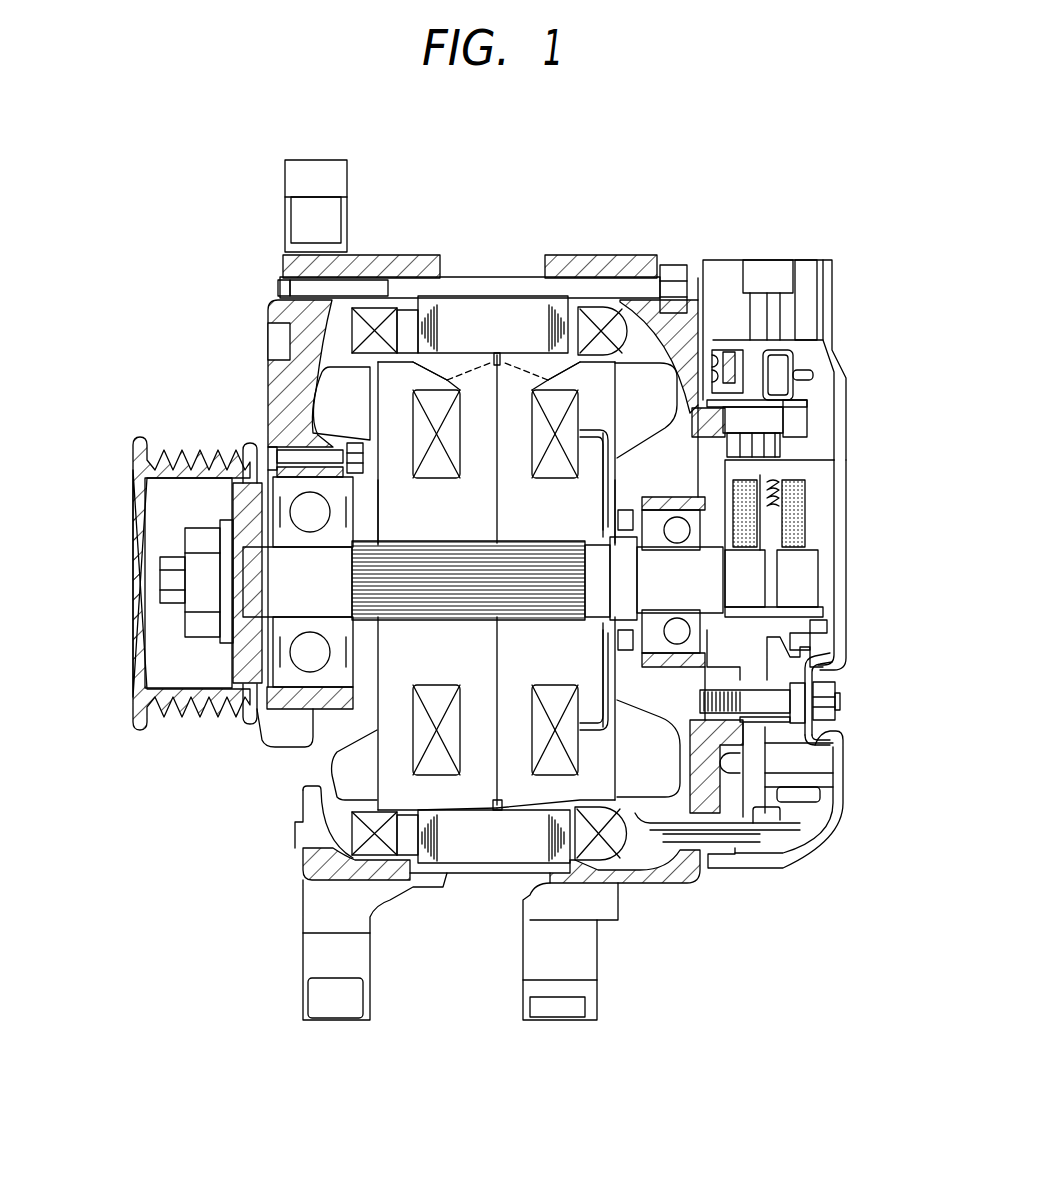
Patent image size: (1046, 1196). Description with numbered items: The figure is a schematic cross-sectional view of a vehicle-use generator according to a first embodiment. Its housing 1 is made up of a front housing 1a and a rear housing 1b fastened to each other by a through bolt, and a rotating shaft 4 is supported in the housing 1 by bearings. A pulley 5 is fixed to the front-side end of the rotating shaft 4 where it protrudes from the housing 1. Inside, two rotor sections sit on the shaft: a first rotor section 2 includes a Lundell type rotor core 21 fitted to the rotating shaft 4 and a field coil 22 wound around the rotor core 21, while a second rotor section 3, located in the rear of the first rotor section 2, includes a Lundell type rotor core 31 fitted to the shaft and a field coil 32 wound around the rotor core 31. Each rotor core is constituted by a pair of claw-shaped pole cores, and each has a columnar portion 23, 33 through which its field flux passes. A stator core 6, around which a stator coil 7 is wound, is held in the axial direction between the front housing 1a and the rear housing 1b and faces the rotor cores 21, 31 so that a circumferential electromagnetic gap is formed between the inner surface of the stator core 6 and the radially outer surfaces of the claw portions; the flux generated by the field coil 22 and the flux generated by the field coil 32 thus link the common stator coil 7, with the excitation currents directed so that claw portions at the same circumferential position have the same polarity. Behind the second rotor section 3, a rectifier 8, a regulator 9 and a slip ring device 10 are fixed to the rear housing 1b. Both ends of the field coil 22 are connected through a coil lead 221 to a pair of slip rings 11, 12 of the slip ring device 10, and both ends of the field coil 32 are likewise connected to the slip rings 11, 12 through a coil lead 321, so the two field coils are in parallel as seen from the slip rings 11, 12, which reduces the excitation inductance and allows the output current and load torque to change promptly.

The housing 1 is at (428, 240).
The front housing 1a is at (377, 258).
The rear housing 1b is at (578, 258).
The first rotor section 2 is at (365, 410).
The second rotor section 3 is at (622, 400).
The rotor core 21 is at (440, 529).
The field coil 22 is at (440, 470).
The columnar portion 23 is at (478, 412).
The rotor core 31 is at (545, 529).
The field coil 32 is at (552, 470).
The columnar portion 33 is at (513, 412).
The coil lead 221 is at (618, 662).
The coil lead 321 is at (614, 497).
The rotating shaft 4 is at (263, 598).
The pulley 5 is at (137, 727).
The stator core 6 is at (480, 302).
The stator coil 7 is at (600, 313).
The rectifier 8 is at (852, 815).
The regulator 9 is at (842, 316).
The slip ring device 10 is at (852, 517).
The slip ring 11 is at (758, 605).
The slip ring 12 is at (812, 605).